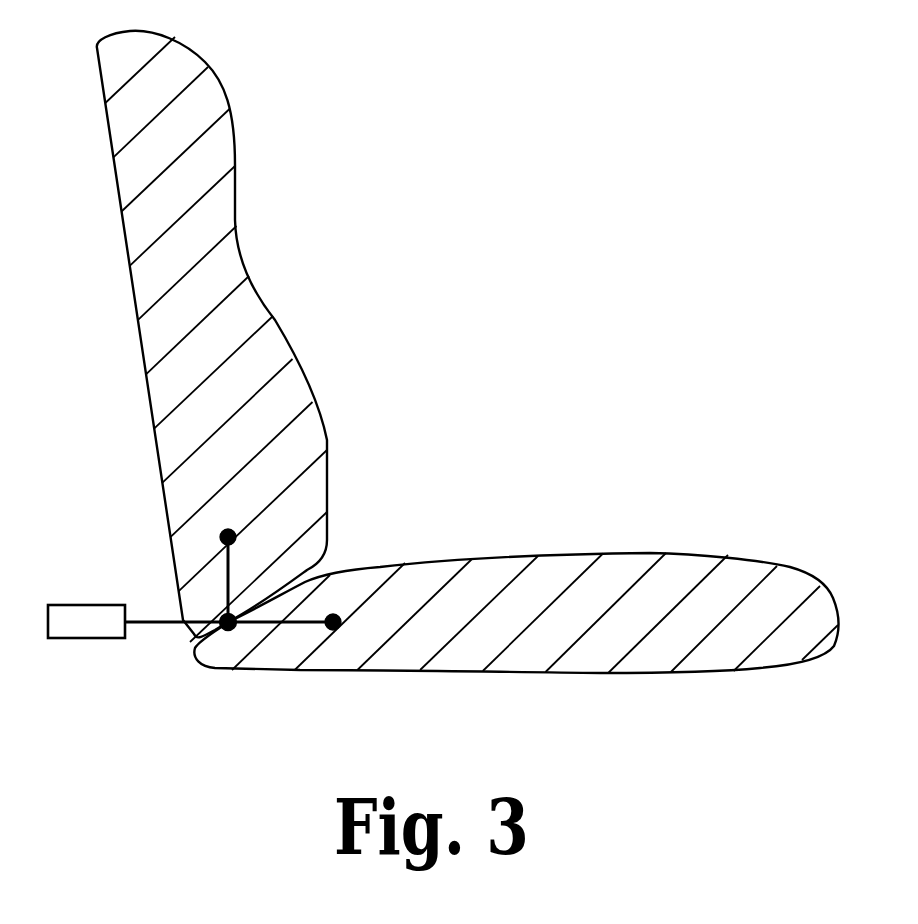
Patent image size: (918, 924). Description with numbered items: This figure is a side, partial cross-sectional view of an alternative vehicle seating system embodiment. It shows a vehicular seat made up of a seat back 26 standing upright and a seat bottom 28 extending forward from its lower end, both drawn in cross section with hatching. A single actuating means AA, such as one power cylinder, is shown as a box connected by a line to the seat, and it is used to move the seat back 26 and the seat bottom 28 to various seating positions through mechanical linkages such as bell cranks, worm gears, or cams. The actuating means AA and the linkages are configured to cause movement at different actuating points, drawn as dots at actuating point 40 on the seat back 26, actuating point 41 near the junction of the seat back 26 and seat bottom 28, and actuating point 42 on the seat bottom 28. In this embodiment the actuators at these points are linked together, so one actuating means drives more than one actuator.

The seat back 26 is at (97, 92).
The seat bottom 28 is at (727, 670).
The actuating point 40 is at (228, 537).
The actuating point 41 is at (226, 618).
The actuating point 42 is at (333, 622).